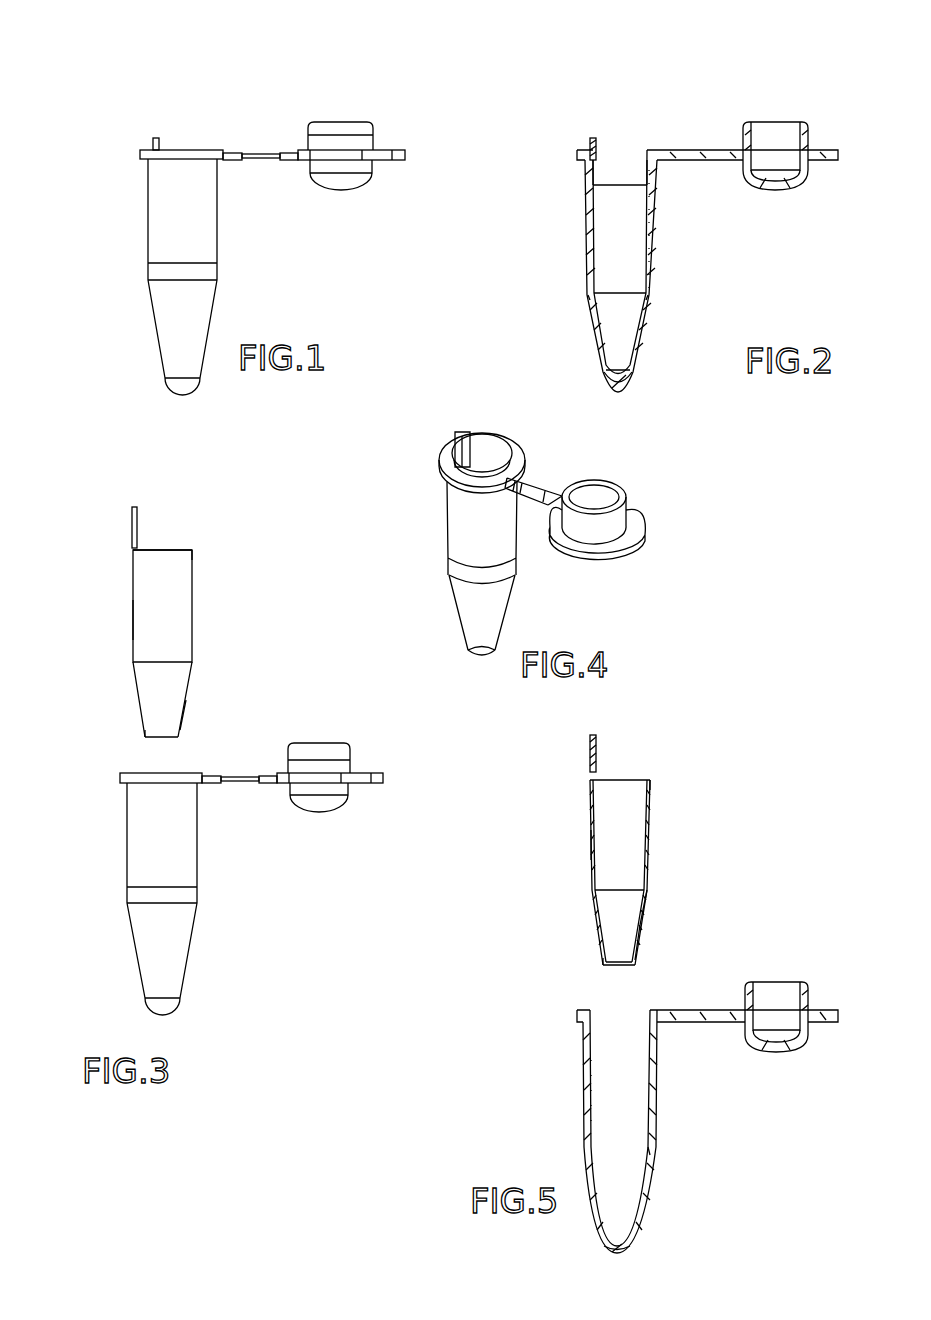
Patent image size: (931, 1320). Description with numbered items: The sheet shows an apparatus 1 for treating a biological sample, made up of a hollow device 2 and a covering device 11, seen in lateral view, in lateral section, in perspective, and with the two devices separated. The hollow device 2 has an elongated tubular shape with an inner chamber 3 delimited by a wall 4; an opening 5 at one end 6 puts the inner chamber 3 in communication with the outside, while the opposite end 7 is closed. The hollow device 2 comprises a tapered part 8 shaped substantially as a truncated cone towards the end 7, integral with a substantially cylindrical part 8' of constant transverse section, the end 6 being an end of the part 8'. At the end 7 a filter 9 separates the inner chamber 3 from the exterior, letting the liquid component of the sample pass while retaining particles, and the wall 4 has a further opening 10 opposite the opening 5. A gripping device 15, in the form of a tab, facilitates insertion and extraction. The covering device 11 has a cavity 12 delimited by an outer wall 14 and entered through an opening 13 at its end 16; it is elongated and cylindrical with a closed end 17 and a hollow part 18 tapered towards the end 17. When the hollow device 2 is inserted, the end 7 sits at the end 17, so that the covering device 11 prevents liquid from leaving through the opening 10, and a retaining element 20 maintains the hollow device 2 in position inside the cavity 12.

In FIG. 1, the apparatus 1 is at (235, 224).
In FIG. 2, the apparatus 1 is at (670, 226).
In FIG. 3, the apparatus 1 is at (218, 750).
In FIG. 4, the apparatus 1 is at (518, 487).
In FIG. 2, the hollow device 2 is at (603, 250).
In FIG. 3, the hollow device 2 is at (167, 610).
In FIG. 5, the hollow device 2 is at (620, 837).
In FIG. 5, the inner chamber 3 is at (597, 810).
In FIG. 3, the wall 4 is at (185, 612).
In FIG. 5, the wall 4 is at (650, 840).
In FIG. 3, the opening 5 is at (190, 548).
In FIG. 5, the opening 5 is at (645, 775).
In FIG. 3, the end 6 is at (205, 555).
In FIG. 5, the end 6 is at (665, 780).
In FIG. 3, the closed end 7 is at (190, 730).
In FIG. 5, the closed end 7 is at (650, 955).
In FIG. 3, the tapered part 8 is at (199, 689).
In FIG. 5, the tapered part 8 is at (679, 900).
In FIG. 3, the tubular part 8' is at (101, 611).
In FIG. 5, the tubular part 8' is at (555, 839).
In FIG. 3, the filter 9 is at (163, 737).
In FIG. 5, the filter 9 is at (628, 966).
In FIG. 3, the further opening 10 is at (147, 742).
In FIG. 5, the further opening 10 is at (601, 970).
In FIG. 1, the covering device 11 is at (144, 252).
In FIG. 2, the covering device 11 is at (615, 245).
In FIG. 3, the covering device 11 is at (170, 878).
In FIG. 4, the covering device 11 is at (489, 520).
In FIG. 5, the covering device 11 is at (615, 1121).
In FIG. 2, the cavity 12 is at (644, 170).
In FIG. 4, the cavity 12 is at (483, 460).
In FIG. 5, the cavity 12 is at (595, 1050).
In FIG. 1, the opening 13 is at (207, 148).
In FIG. 2, the opening 13 is at (642, 145).
In FIG. 3, the opening 13 is at (292, 777).
In FIG. 4, the opening 13 is at (515, 440).
In FIG. 5, the opening 13 is at (654, 1005).
In FIG. 1, the outer wall 14 is at (157, 233).
In FIG. 2, the outer wall 14 is at (583, 215).
In FIG. 3, the outer wall 14 is at (193, 843).
In FIG. 5, the outer wall 14 is at (653, 1095).
In FIG. 1, the gripping device 15 is at (156, 138).
In FIG. 2, the gripping device 15 is at (588, 141).
In FIG. 3, the gripping device 15 is at (132, 520).
In FIG. 4, the gripping device 15 is at (466, 432).
In FIG. 5, the gripping device 15 is at (590, 752).
In FIG. 1, the end 16 is at (132, 160).
In FIG. 2, the end 16 is at (570, 152).
In FIG. 3, the end 16 is at (114, 780).
In FIG. 5, the end 16 is at (570, 1018).
In FIG. 1, the closed end 17 is at (163, 387).
In FIG. 2, the closed end 17 is at (638, 388).
In FIG. 3, the closed end 17 is at (183, 1012).
In FIG. 5, the closed end 17 is at (590, 1243).
In FIG. 1, the tapered part 18 is at (142, 313).
In FIG. 2, the tapered part 18 is at (660, 325).
In FIG. 3, the tapered part 18 is at (205, 950).
In FIG. 4, the tapered part 18 is at (452, 603).
In FIG. 5, the tapered part 18 is at (660, 1205).
In FIG. 2, the retaining element 20 is at (662, 230).